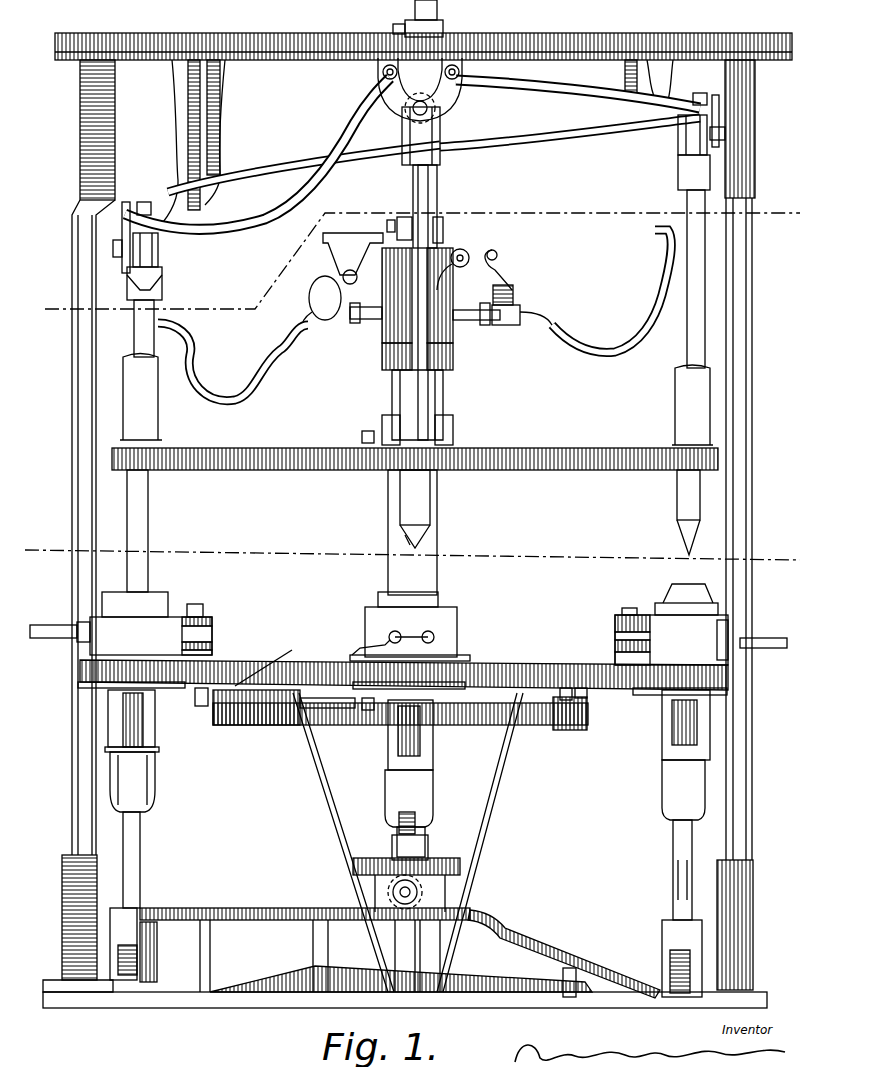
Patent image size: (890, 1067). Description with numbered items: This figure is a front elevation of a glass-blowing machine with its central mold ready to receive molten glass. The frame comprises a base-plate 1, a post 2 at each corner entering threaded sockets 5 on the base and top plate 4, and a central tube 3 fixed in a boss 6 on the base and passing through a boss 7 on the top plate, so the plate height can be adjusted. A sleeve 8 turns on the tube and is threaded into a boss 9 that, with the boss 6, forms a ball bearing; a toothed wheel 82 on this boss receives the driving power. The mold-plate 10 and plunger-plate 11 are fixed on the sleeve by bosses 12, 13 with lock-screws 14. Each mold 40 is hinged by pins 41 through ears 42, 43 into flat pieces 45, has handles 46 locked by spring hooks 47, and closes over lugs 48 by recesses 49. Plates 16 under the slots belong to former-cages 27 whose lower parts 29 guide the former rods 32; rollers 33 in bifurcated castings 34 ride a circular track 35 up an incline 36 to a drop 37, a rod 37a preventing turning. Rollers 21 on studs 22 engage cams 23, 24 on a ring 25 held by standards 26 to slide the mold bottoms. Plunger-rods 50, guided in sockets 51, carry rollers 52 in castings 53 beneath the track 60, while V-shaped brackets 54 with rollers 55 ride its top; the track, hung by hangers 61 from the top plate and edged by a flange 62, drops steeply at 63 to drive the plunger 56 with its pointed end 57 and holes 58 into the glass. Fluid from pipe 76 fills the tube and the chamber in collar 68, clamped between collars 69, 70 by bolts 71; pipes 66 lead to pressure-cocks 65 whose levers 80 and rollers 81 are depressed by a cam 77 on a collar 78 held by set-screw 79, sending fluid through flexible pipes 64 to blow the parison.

The base-plate 1 is at (250, 1008).
The post 2 is at (763, 750).
The central tube 3 is at (437, 177).
The top plate 4 is at (305, 36).
The threaded socket 5 is at (80, 105).
The boss 6 is at (430, 950).
The boss 7 is at (443, 31).
The sleeve 8 is at (315, 290).
The boss 9 is at (447, 890).
The mold-plate 10 is at (535, 665).
The plunger-plate 11 is at (571, 449).
The boss 12 is at (445, 718).
The boss 13 is at (453, 430).
The lock-screw 14 is at (362, 437).
The plate 16 is at (90, 684).
The roller 21 is at (203, 706).
The depending stud 22 is at (603, 698).
The cam 23 is at (238, 722).
The cam 24 is at (578, 730).
The ring 25 is at (345, 725).
The standard 26 is at (322, 790).
The former-cage 27 is at (158, 738).
The lower part of former-cage 29 is at (157, 785).
The rod 32 is at (140, 843).
The roller 33 is at (140, 960).
The bifurcated casting 34 is at (130, 912).
The circular track 35 is at (250, 908).
The inclined portion 36 is at (560, 962).
The drop 37 is at (158, 940).
The rod 37a is at (400, 820).
The mold 40 is at (498, 605).
The pin 41 is at (195, 604).
The ear 42 is at (212, 619).
The ear 43 is at (212, 632).
The flat piece 45 is at (212, 658).
The handle 46 is at (50, 627).
The spring locking-hook 47 is at (80, 625).
The lug 48 is at (428, 645).
The recess 49 is at (437, 640).
The plunger-rod 50 is at (428, 190).
The guide-socket 51 is at (443, 396).
The roller 52 is at (160, 245).
The bifurcated casting 53 is at (432, 135).
The V-shaped bracket 54 is at (385, 85).
The roller 55 is at (145, 202).
The plunger 56 is at (432, 488).
The pointed end 57 is at (430, 520).
The small hole 58 is at (402, 512).
The circular track 60 is at (566, 108).
The hanger 61 is at (212, 97).
The flange 62 is at (256, 166).
The downward curve 63 is at (328, 176).
The flexible pipe 64 is at (246, 397).
The pressure-cock 65 is at (330, 322).
The pipe 66 is at (368, 307).
The collar 68 is at (390, 320).
The collar 69 is at (460, 255).
The collar 70 is at (390, 355).
The bolt 71 is at (468, 256).
The pipe 76 is at (437, 12).
The cam 77 is at (340, 262).
The collar 78 is at (443, 222).
The set-screw 79 is at (387, 224).
The lever 80 is at (512, 280).
The roller 81 is at (505, 262).
The toothed wheel 82 is at (440, 873).